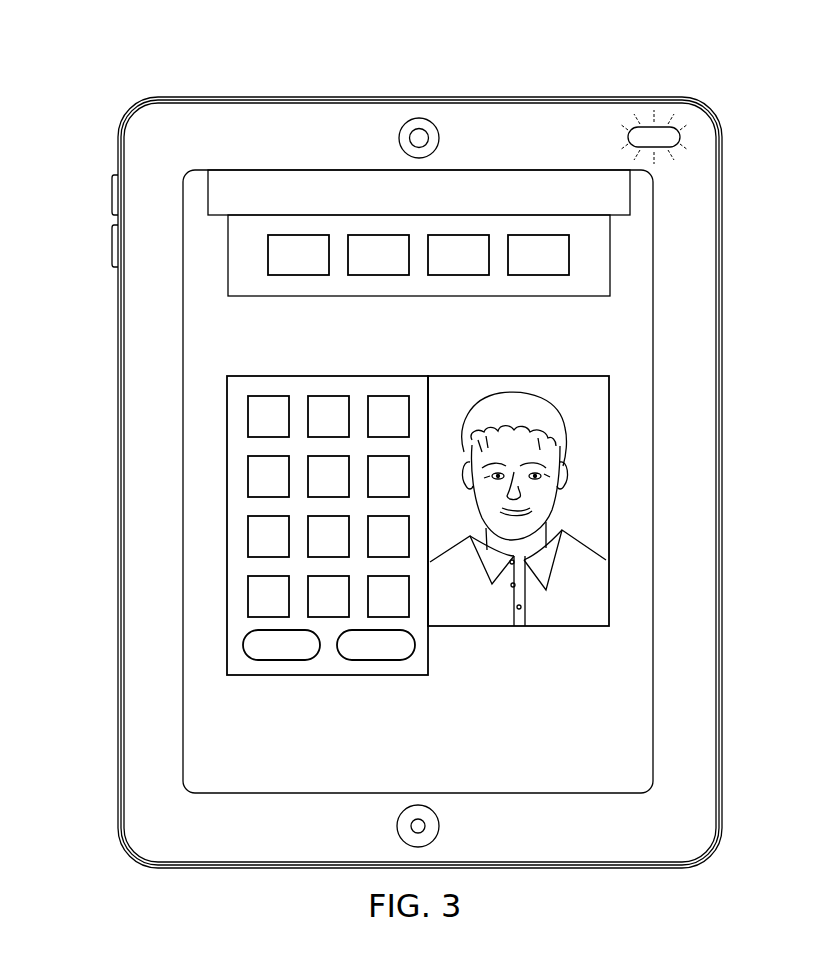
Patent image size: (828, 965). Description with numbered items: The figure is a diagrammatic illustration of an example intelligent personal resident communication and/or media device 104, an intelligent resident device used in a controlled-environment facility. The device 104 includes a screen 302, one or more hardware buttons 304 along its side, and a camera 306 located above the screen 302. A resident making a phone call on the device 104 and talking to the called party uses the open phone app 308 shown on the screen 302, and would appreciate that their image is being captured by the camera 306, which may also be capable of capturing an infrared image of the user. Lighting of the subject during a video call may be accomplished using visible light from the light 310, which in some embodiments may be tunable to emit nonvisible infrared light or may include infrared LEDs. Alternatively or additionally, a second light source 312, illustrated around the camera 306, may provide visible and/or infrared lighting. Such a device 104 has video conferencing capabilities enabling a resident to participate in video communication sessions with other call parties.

The intelligent personal resident communication and/or media device 104 is at (586, 68).
The screen 302 is at (320, 782).
The hardware buttons 304 is at (101, 225).
The camera 306 is at (420, 140).
The phone app 308 is at (499, 646).
The light 310 is at (628, 137).
The second light source 312 is at (399, 136).